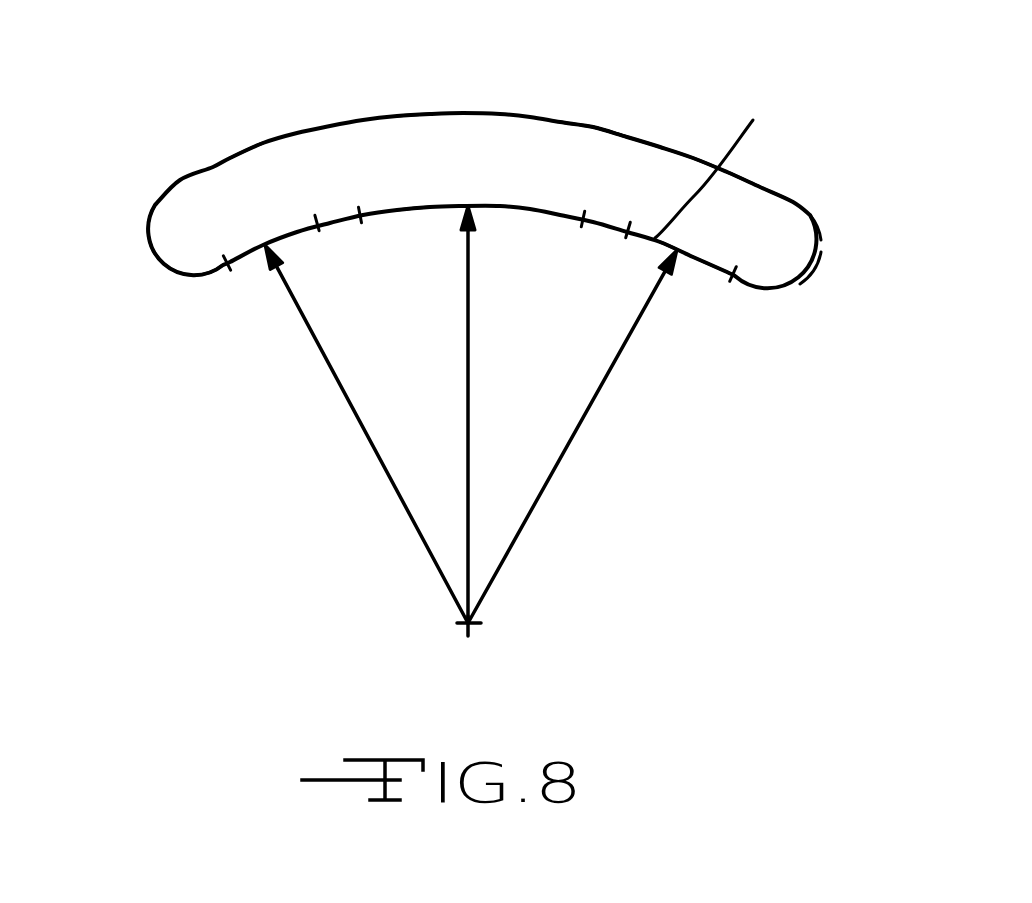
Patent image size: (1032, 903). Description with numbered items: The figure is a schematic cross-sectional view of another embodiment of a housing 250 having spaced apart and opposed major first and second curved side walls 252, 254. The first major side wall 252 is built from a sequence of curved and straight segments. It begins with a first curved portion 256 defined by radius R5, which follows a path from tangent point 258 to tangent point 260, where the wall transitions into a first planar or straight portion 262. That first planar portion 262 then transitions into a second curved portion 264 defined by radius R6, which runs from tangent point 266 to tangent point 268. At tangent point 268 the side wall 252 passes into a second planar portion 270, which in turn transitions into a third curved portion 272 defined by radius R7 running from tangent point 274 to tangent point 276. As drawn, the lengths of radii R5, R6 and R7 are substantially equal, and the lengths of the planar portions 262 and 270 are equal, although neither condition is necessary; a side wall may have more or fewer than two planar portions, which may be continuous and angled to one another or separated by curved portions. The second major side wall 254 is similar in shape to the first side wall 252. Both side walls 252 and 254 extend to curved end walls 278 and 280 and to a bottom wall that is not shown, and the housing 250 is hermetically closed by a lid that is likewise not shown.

The housing 250 is at (838, 101).
The first major side wall 252 is at (733, 273).
The second major side wall 254 is at (766, 188).
The first curved portion 256 is at (264, 244).
The tangent point 258 is at (227, 265).
The tangent point 260 is at (317, 223).
The first planar portion 262 is at (338, 221).
The second curved portion 264 is at (435, 207).
The tangent point 266 is at (362, 213).
The tangent point 268 is at (583, 218).
The second planar portion 270 is at (601, 222).
The third curved portion 272 is at (720, 162).
The tangent point 274 is at (628, 230).
The tangent point 276 is at (818, 225).
The curved end wall 278 is at (815, 268).
The curved end wall 280 is at (147, 262).
The radius R5 is at (323, 359).
The radius R6 is at (467, 309).
The radius R7 is at (591, 405).